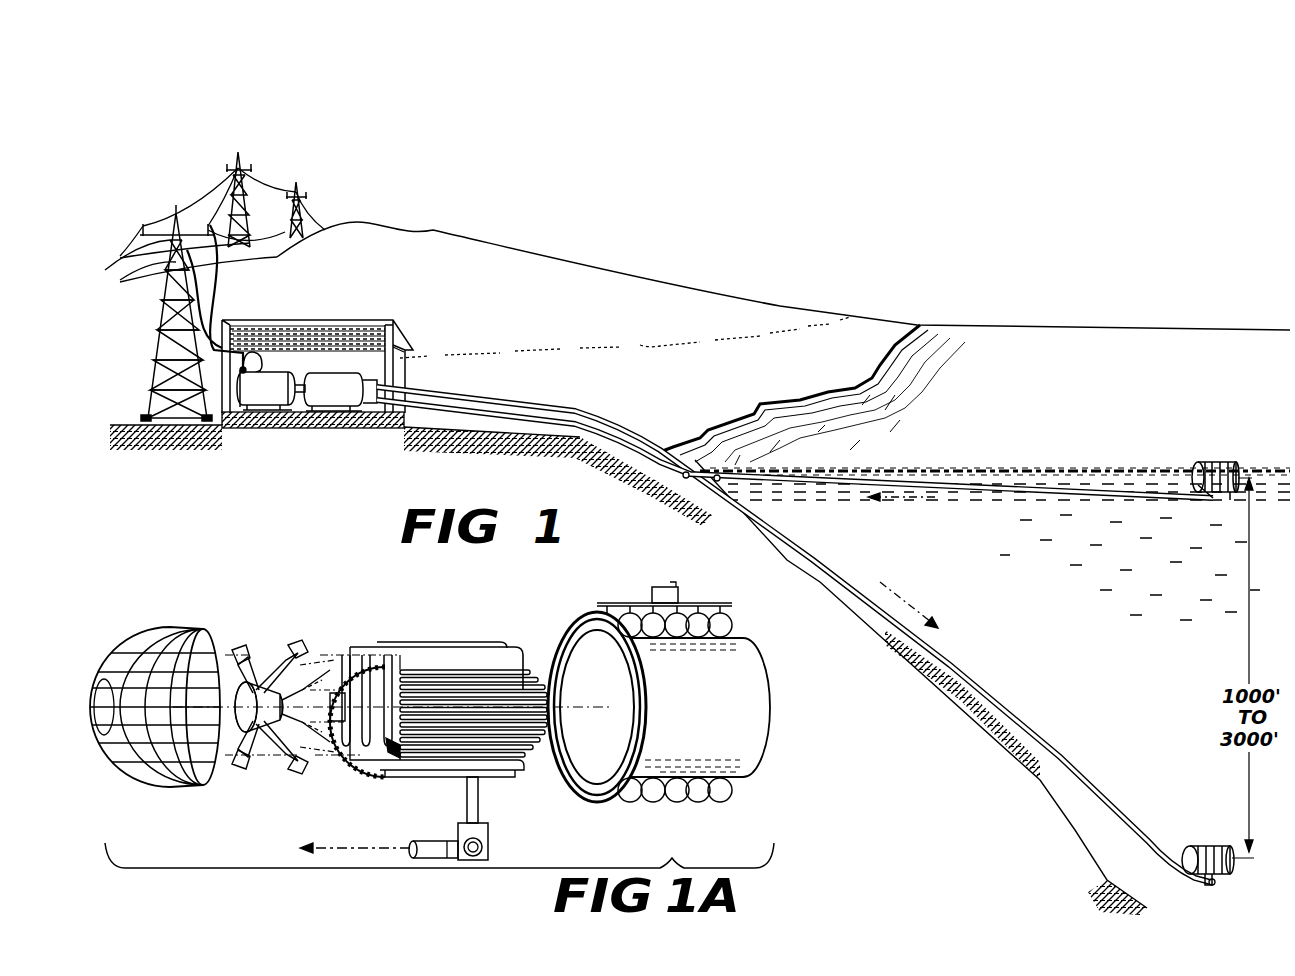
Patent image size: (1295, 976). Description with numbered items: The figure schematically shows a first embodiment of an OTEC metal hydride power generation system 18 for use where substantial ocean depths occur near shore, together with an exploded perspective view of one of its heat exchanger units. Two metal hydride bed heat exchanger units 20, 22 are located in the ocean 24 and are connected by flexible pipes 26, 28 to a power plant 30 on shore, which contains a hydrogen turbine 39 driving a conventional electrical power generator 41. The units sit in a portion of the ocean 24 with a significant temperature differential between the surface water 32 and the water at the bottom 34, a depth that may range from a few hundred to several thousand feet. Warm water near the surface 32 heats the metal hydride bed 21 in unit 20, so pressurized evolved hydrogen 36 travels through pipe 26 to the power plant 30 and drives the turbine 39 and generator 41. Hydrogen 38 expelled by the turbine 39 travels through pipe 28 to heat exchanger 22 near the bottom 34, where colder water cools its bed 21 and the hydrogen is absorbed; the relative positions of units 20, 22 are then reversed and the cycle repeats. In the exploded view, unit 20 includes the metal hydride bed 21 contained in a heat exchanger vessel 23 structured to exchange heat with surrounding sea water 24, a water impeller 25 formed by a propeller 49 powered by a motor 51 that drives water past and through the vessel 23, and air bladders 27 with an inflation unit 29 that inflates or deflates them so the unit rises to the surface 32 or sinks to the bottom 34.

In FIG. 1, the OTEC metal hydride power generation system 18 is at (1034, 241).
In FIG. 1, the metal hydride bed heat exchanger unit 20 is at (1213, 462).
In FIG. 1A, the metal hydride bed heat exchanger unit 20 is at (585, 590).
In FIG. 1A, the metal hydride bed 21 is at (385, 758).
In FIG. 1, the metal hydride bed heat exchanger unit 22 is at (1215, 845).
In FIG. 1A, the heat exchanger vessel 23 is at (440, 643).
In FIG. 1, the ocean 24 is at (1152, 672).
In FIG. 1A, the ocean 24 is at (340, 652).
In FIG. 1A, the water impeller 25 is at (277, 645).
In FIG. 1, the flexible pipe 26 is at (990, 490).
In FIG. 1A, the air bladders 27 is at (730, 628).
In FIG. 1, the flexible pipe 28 is at (1070, 762).
In FIG. 1A, the flexible pipe 28 is at (428, 838).
In FIG. 1A, the inflation unit 29 is at (661, 586).
In FIG. 1, the power plant 30 is at (378, 320).
In FIG. 1, the ocean surface 32 is at (1068, 330).
In FIG. 1, the ocean bottom 34 is at (1152, 908).
In FIG. 1, the evolved hydrogen 36 is at (915, 500).
In FIG. 1A, the evolved hydrogen 36 is at (358, 848).
In FIG. 1, the expelled hydrogen 38 is at (907, 602).
In FIG. 1, the hydrogen turbine 39 is at (333, 395).
In FIG. 1, the electrical power generator 41 is at (262, 393).
In FIG. 1A, the propeller 49 is at (318, 680).
In FIG. 1A, the motor 51 is at (255, 672).